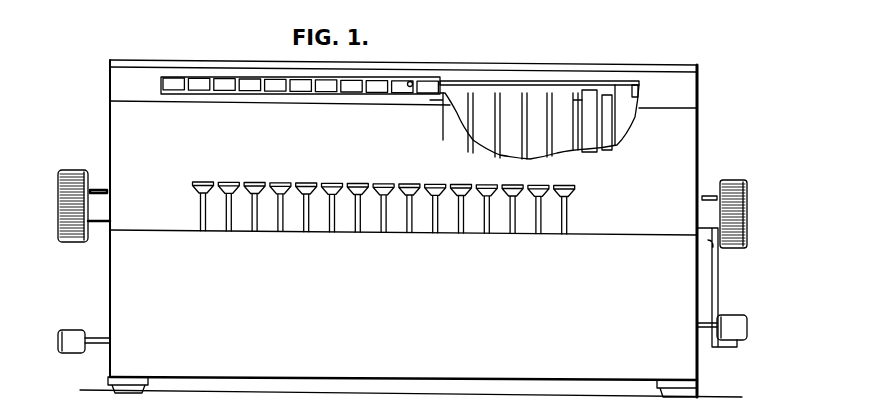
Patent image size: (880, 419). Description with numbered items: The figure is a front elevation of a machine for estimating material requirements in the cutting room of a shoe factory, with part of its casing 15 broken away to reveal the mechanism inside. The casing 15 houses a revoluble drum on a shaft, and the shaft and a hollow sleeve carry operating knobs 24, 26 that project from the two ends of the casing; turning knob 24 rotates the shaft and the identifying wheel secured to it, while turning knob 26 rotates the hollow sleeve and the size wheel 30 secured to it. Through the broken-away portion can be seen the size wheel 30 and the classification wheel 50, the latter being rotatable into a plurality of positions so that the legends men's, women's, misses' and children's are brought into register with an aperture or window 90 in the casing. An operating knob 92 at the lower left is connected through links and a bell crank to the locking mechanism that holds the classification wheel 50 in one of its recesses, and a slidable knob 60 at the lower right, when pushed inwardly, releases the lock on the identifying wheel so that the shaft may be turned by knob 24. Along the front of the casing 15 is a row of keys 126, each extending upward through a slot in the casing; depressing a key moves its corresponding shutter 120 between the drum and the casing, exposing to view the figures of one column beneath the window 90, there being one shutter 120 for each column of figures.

The casing 15 is at (112, 117).
The shutters 120 is at (380, 82).
The aperture or window 90 is at (412, 82).
The classification wheel 50 is at (591, 93).
The size wheel 30 is at (630, 88).
The key 126 is at (386, 178).
The operating knob 24 is at (58, 200).
The operating knob 26 is at (747, 195).
The operating knob 92 is at (68, 330).
The knob 60 is at (745, 322).